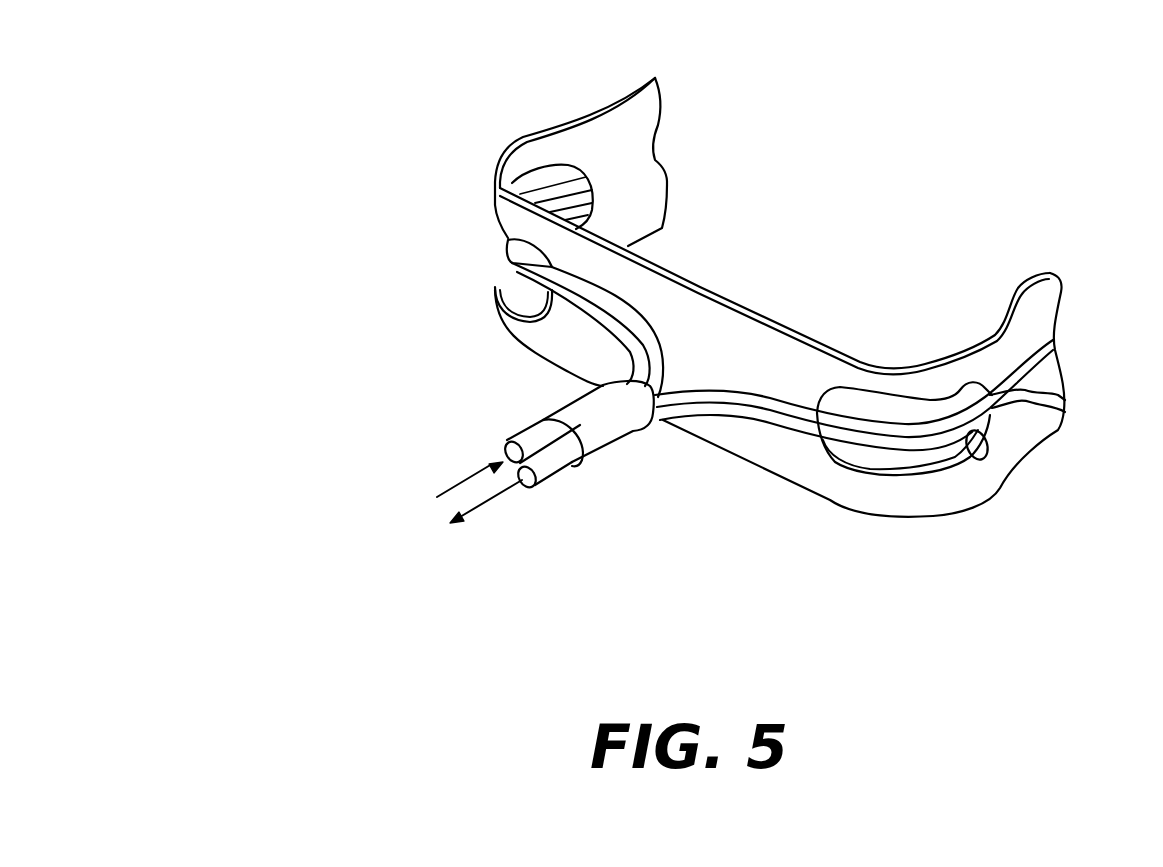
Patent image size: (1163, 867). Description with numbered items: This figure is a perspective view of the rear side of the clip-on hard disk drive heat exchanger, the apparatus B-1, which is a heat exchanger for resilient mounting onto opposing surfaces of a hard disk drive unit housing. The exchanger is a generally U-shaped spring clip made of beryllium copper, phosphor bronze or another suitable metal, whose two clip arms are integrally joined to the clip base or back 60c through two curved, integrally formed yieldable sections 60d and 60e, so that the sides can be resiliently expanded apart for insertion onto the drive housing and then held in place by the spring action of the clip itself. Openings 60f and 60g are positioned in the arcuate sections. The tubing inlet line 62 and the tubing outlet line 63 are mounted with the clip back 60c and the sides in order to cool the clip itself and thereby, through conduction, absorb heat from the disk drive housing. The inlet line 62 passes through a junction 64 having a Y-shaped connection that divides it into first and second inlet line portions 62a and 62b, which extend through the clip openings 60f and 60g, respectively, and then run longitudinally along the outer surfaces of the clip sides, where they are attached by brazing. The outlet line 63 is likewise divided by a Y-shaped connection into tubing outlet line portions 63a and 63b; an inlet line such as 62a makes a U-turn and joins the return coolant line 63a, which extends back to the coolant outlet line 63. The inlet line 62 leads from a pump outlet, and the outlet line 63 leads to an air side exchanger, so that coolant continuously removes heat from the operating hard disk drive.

The apparatus B-1 is at (380, 337).
The clip base or back 60c is at (757, 445).
The yieldable section 60d is at (973, 513).
The yieldable section 60e is at (512, 132).
The opening 60f is at (560, 173).
The opening 60g is at (993, 440).
The tubing inlet line 62 is at (525, 437).
The first inlet line portion 62a is at (528, 281).
The second inlet line portion 62b is at (888, 457).
The tubing outlet line 63 is at (540, 473).
The tubing outlet line portion 63a is at (618, 302).
The tubing outlet line portion 63b is at (743, 391).
The junction 64 is at (587, 403).